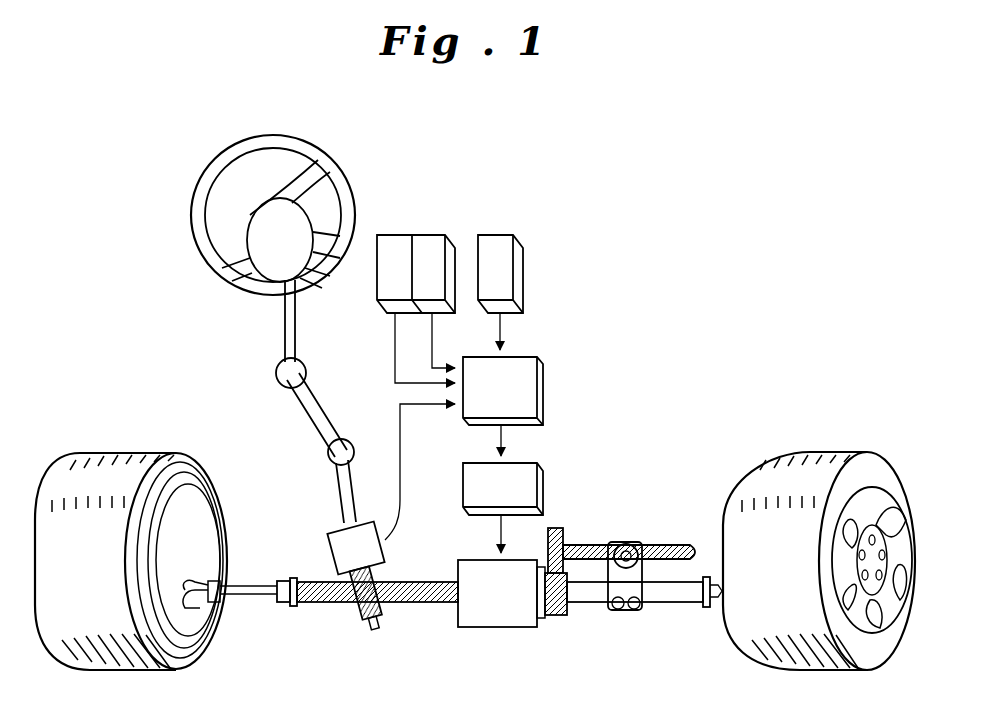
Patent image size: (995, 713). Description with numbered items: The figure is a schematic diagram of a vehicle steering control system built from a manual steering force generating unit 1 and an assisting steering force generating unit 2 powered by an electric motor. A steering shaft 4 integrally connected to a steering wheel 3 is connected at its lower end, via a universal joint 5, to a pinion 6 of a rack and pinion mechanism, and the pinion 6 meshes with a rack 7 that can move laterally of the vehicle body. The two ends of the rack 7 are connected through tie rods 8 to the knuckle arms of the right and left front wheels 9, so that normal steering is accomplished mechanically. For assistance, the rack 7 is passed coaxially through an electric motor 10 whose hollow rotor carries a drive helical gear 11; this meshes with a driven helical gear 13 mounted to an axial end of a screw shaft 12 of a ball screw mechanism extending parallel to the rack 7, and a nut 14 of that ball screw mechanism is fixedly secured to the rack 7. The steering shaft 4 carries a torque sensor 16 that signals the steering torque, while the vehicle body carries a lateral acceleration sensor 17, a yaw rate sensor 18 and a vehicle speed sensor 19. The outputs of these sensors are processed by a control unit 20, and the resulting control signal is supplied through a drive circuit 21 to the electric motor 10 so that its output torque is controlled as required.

The manual steering force generating unit 1 is at (325, 570).
The assisting steering force generating unit 2 is at (645, 536).
The steering wheel 3 is at (192, 210).
The steering shaft 4 is at (298, 340).
The universal joint 5 is at (322, 428).
The pinion 6 is at (362, 622).
The rack 7 is at (415, 605).
The tie rod 8 is at (262, 600).
The front wheel 9 is at (118, 452).
The electric motor 10 is at (495, 628).
The drive helical gear 11 is at (556, 617).
The screw shaft 12 is at (685, 545).
The driven helical gear 13 is at (560, 528).
The nut 14 is at (615, 540).
The torque sensor 16 is at (387, 553).
The lateral acceleration sensor 17 is at (390, 235).
The yaw rate sensor 18 is at (430, 235).
The vehicle speed sensor 19 is at (523, 285).
The control unit 20 is at (503, 406).
The drive circuit 21 is at (517, 463).